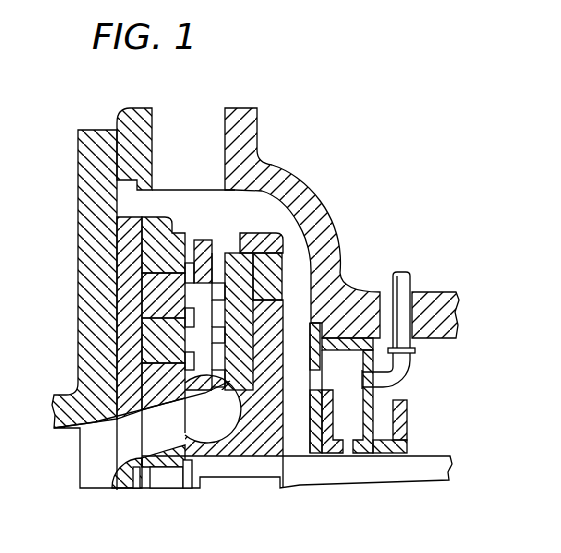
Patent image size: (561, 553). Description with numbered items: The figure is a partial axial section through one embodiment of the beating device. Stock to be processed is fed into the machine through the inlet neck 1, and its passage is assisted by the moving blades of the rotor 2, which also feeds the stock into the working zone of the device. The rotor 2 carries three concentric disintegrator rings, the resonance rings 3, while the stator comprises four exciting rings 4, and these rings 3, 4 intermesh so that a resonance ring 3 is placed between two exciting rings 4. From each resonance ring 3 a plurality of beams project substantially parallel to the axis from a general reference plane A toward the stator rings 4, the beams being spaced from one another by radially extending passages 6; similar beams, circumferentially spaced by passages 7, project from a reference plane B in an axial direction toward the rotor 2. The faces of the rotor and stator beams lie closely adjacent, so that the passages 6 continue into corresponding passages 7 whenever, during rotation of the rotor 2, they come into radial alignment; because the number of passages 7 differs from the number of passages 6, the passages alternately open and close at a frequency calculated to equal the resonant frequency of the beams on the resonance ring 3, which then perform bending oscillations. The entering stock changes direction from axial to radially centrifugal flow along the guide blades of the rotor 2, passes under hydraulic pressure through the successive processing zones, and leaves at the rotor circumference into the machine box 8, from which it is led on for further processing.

The inlet neck 1 is at (100, 443).
The rotor 2 is at (257, 442).
The disintegrator rings of the rotor (resonance rings) 3 is at (262, 312).
The rings of the stator (exciting rings) 4 is at (157, 334).
The radially extending passages 6 is at (217, 267).
The passages 7 is at (199, 300).
The machine box 8 is at (298, 442).
The general reference plane A is at (223, 217).
The reference plane B is at (177, 217).